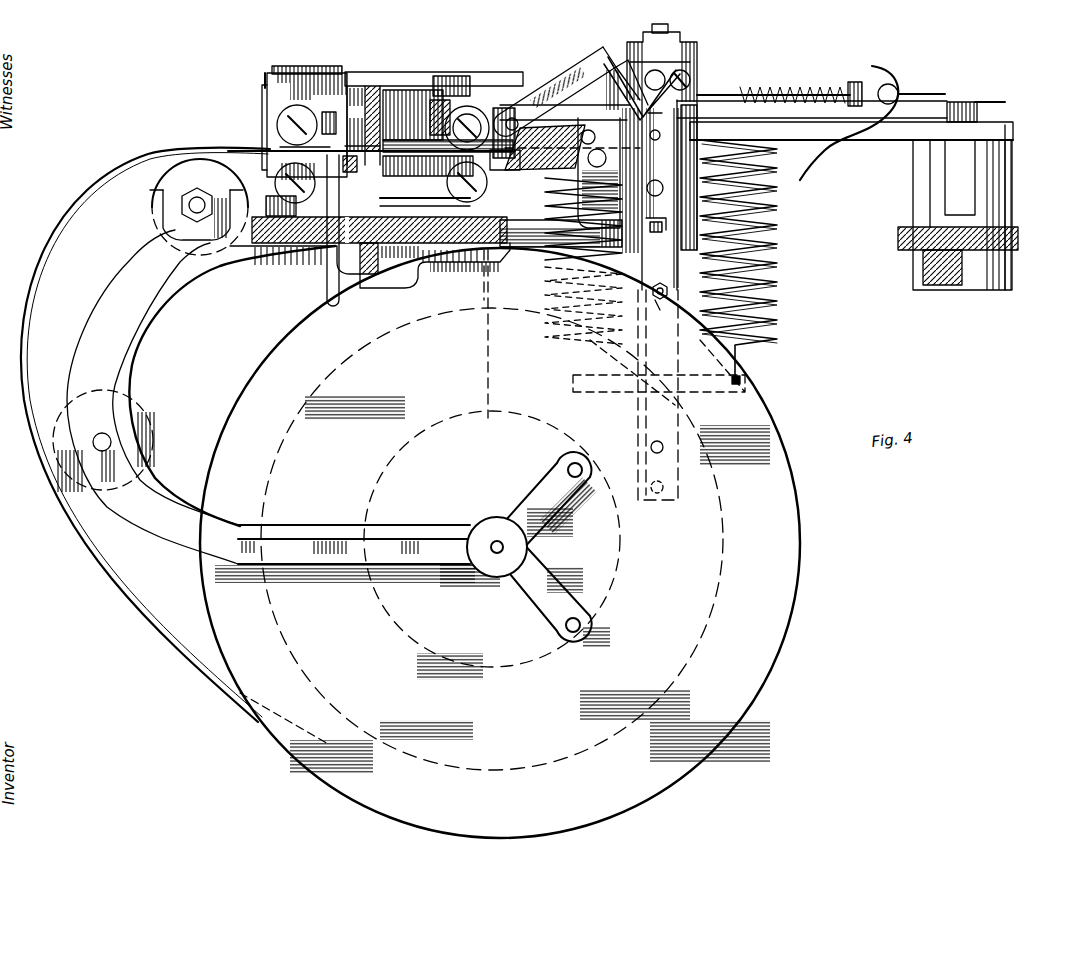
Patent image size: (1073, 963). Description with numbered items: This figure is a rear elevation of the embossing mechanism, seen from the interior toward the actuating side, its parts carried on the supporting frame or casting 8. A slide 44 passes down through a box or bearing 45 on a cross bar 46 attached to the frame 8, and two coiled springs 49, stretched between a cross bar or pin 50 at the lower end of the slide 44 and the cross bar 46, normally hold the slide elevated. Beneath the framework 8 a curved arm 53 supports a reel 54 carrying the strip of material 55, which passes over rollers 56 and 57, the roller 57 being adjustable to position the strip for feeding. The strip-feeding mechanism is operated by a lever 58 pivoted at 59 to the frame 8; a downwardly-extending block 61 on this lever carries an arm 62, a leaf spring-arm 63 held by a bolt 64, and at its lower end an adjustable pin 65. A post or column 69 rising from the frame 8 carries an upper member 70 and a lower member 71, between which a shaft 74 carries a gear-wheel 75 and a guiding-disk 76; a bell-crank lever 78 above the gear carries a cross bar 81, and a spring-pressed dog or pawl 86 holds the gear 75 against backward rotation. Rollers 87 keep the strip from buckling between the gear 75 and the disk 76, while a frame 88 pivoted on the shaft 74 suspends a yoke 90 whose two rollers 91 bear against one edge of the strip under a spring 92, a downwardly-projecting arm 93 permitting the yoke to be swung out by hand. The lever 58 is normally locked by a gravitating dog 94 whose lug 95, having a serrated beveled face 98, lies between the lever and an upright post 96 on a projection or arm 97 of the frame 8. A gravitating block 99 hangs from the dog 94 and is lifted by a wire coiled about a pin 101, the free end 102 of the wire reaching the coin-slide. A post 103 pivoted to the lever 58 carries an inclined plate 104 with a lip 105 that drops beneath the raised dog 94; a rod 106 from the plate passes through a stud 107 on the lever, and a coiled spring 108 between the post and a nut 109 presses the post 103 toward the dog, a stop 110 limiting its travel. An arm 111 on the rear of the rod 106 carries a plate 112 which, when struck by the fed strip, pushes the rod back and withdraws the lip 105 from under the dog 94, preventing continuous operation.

The frame or casting 8 is at (275, 247).
The slide 44 is at (668, 26).
The box or bearing 45 is at (662, 141).
The cross bar or member 46 is at (973, 103).
The coiled springs 49 is at (790, 290).
The cross bar or pin 50 is at (742, 380).
The curved arm 53 is at (137, 362).
The reel 54 is at (500, 543).
The strip of material 55 is at (24, 385).
The roller 56 is at (155, 422).
The roller 57 is at (199, 207).
The feed-operating lever 58 is at (892, 140).
The pivot 59 is at (970, 118).
The block 61 is at (812, 118).
The arm 62 is at (668, 287).
The spring-arm 63 is at (683, 412).
The bolt 64 is at (655, 315).
The adjustable pin 65 is at (656, 217).
The post or column 69 is at (265, 80).
The upper member 70 is at (410, 98).
The lower member 71 is at (428, 192).
The shaft 74 is at (444, 137).
The gear-wheel 75 is at (351, 145).
The guiding-disk 76 is at (440, 137).
The bell-crank lever 78 is at (332, 123).
The cross bar or member 81 is at (467, 122).
The spring-pressed dog or pawl 86 is at (337, 166).
The rollers 87 is at (278, 124).
The frame 88 is at (460, 80).
The yoke 90 is at (270, 104).
The rollers 91 is at (262, 143).
The spring 92 is at (280, 206).
The downwardly-projecting arm 93 is at (327, 295).
The gravitating dog 94 is at (565, 92).
The lug 95 is at (592, 74).
The upright stud or post 96 is at (599, 173).
The projection or arm 97 is at (556, 230).
The beveled face 98 is at (624, 63).
The gravitating block 99 is at (572, 147).
The pin 101 is at (505, 180).
The free end of the wire 102 is at (492, 392).
The post 103 is at (686, 80).
The inclined plate 104 is at (672, 68).
The lip or projection 105 is at (642, 88).
The rod or bar 106 is at (925, 92).
The stud 107 is at (855, 82).
The coiled spring 108 is at (792, 83).
The nut or shoulder 109 is at (742, 93).
The stop 110 is at (661, 124).
The arm 111 is at (893, 85).
The plate 112 is at (812, 178).